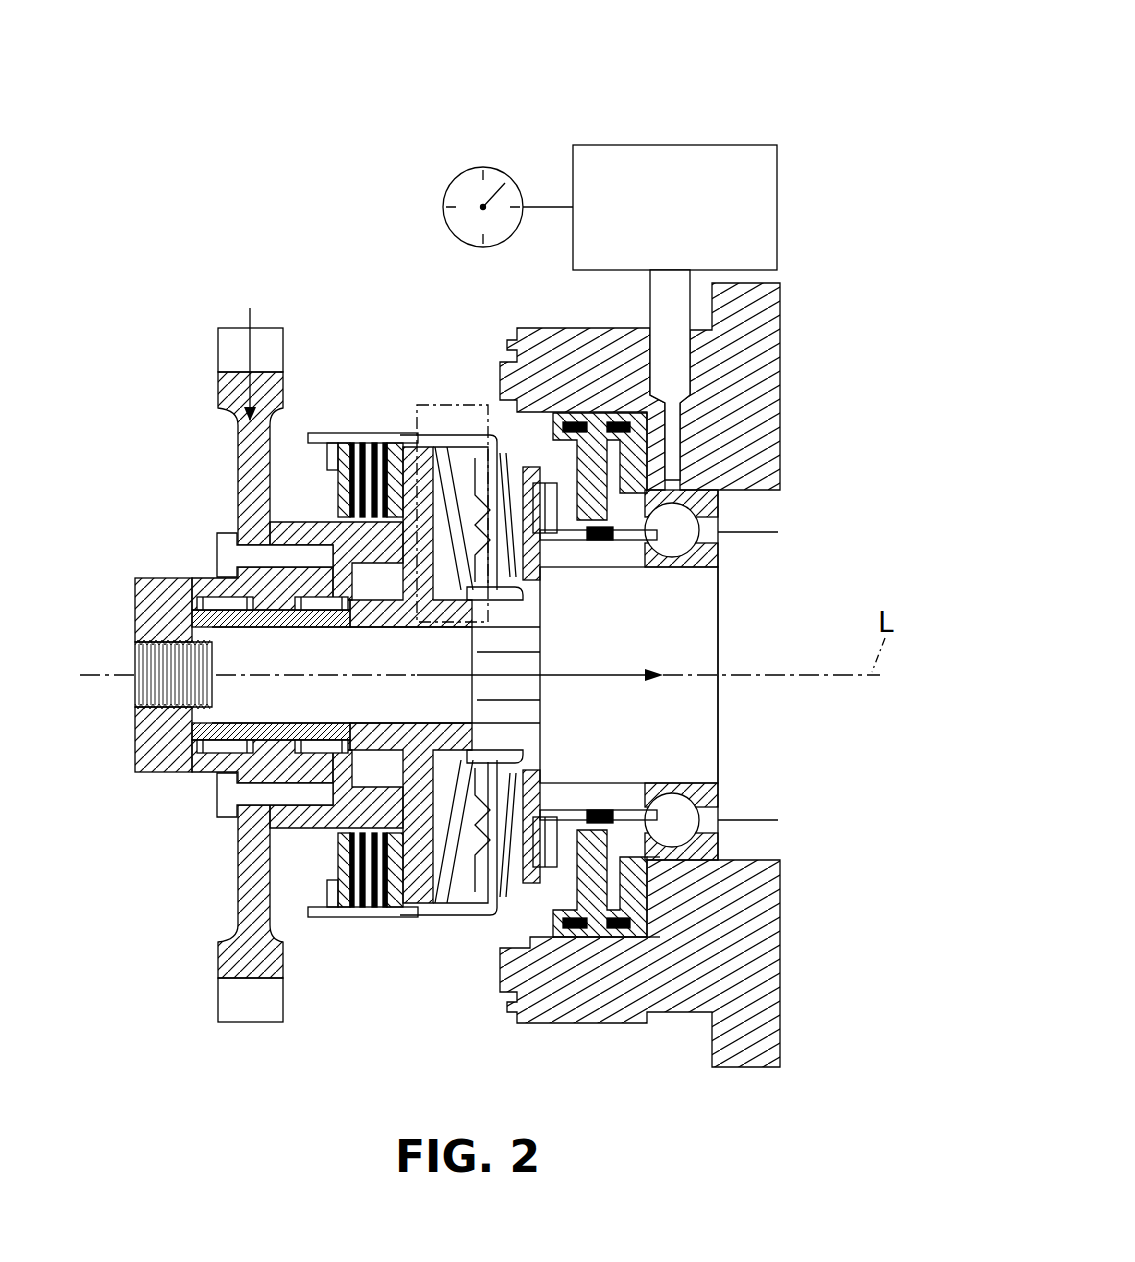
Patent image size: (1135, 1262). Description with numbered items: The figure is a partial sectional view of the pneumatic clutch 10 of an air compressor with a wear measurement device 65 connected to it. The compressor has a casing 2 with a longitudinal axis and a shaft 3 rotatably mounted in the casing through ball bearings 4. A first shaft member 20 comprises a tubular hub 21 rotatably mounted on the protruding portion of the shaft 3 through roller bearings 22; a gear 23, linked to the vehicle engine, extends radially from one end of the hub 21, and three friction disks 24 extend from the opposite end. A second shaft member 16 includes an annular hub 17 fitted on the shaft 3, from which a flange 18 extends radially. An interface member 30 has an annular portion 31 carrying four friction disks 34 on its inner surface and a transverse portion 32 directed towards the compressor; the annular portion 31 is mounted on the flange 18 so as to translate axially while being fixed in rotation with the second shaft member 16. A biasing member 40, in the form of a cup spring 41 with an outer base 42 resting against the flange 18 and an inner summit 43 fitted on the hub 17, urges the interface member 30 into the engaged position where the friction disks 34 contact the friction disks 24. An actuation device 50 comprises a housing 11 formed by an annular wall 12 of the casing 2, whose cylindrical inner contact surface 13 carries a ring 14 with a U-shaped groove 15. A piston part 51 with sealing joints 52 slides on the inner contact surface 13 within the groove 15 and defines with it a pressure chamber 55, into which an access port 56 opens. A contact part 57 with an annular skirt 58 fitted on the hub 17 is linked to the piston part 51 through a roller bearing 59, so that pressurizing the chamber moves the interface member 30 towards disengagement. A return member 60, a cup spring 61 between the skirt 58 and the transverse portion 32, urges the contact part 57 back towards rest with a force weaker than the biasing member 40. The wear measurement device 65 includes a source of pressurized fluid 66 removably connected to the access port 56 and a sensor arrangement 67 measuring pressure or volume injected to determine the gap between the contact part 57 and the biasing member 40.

The casing 2 is at (756, 333).
The shaft 3 is at (734, 597).
The ball bearings 4 is at (700, 508).
The clutch 10 is at (302, 315).
The housing 11 is at (606, 1030).
The wall 12 is at (568, 990).
The inner contact surface 13 is at (433, 400).
The ring 14 is at (650, 912).
The groove 15 is at (530, 903).
The second shaft member 16 is at (381, 585).
The hub 17 is at (443, 740).
The flange 18 is at (390, 885).
The first shaft member 20 is at (198, 499).
The hub 21 is at (208, 762).
The roller bearings 22 is at (220, 747).
The gear 23 is at (252, 968).
The friction disks 24 is at (350, 825).
The interface member 30 is at (347, 925).
The annular portion 31 is at (307, 917).
The transverse portion 32 is at (630, 953).
The friction disks 34 is at (333, 865).
The biasing member 40 is at (485, 790).
The cup spring 41 is at (480, 778).
The base 42 is at (435, 450).
The summit 43 is at (462, 585).
The actuation device 50 is at (617, 452).
The piston part 51 is at (610, 840).
The sealing joints 52 is at (630, 937).
The pressure chamber 55 is at (617, 883).
The access port 56 is at (655, 350).
The contact part 57 is at (547, 458).
The annular skirt 58 is at (523, 587).
The roller bearing 59 is at (560, 497).
The return member 60 is at (517, 548).
The cup spring 61 is at (530, 455).
The wear measurement device 65 is at (735, 112).
The source of pressurized fluid 66 is at (777, 172).
The sensor arrangement 67 is at (447, 187).